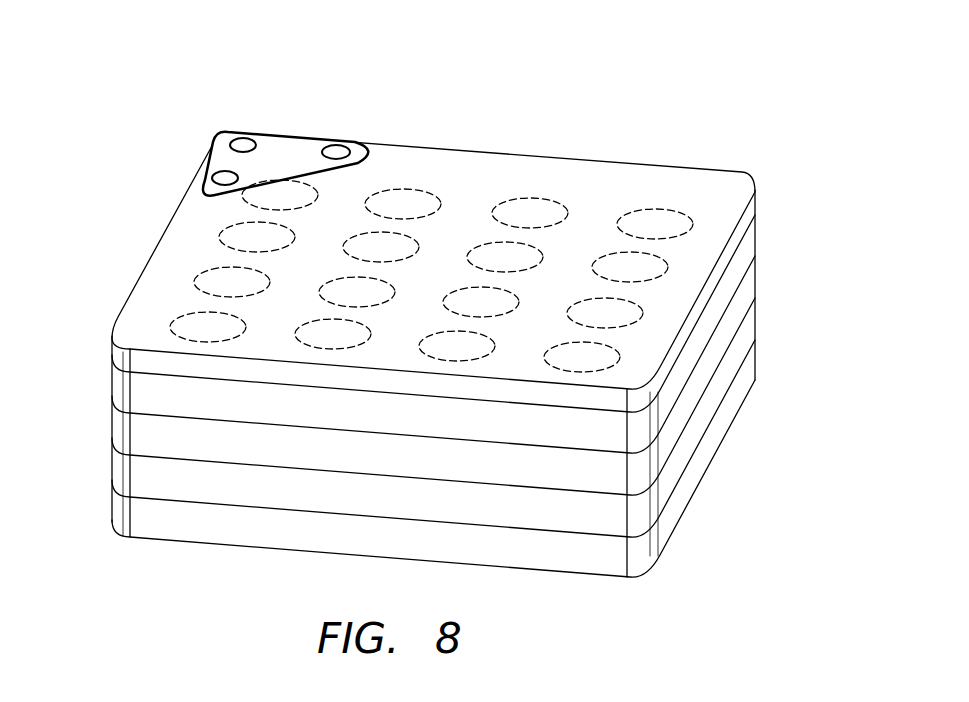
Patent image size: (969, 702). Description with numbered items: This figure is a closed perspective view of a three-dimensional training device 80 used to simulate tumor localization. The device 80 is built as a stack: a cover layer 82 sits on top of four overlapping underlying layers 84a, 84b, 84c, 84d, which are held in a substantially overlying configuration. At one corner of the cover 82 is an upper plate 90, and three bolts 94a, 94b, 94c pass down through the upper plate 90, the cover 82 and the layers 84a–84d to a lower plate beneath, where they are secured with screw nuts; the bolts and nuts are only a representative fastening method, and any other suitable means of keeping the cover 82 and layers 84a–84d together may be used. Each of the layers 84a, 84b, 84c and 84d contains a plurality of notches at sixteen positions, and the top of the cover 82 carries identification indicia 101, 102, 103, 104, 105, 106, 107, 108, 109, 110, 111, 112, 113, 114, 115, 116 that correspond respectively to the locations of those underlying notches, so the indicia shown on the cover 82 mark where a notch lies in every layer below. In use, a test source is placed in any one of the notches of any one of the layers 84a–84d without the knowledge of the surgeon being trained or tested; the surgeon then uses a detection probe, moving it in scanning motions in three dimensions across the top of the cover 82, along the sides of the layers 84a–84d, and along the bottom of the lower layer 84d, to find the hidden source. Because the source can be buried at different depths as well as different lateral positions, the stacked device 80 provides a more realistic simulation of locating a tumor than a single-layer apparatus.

The three-dimensional training device 80 is at (433, 290).
The cover layer 82 is at (122, 357).
The underlying layer 84a is at (117, 378).
The underlying layer 84b is at (117, 420).
The underlying layer 84c is at (117, 462).
The lower layer 84d is at (117, 503).
The upper plate 90 is at (218, 158).
The bolt 94a is at (222, 178).
The bolt 94b is at (243, 142).
The bolt 94c is at (336, 152).
The identification indicia 101 is at (582, 357).
The identification indicia 102 is at (605, 313).
The identification indicia 103 is at (630, 267).
The identification indicia 104 is at (655, 224).
The identification indicia 105 is at (457, 346).
The identification indicia 106 is at (481, 302).
The identification indicia 107 is at (505, 257).
The identification indicia 108 is at (530, 213).
The identification indicia 109 is at (333, 334).
The identification indicia 110 is at (357, 292).
The identification indicia 111 is at (381, 247).
The identification indicia 112 is at (403, 204).
The identification indicia 113 is at (208, 327).
The identification indicia 114 is at (232, 282).
The identification indicia 115 is at (257, 237).
The identification indicia 116 is at (280, 195).